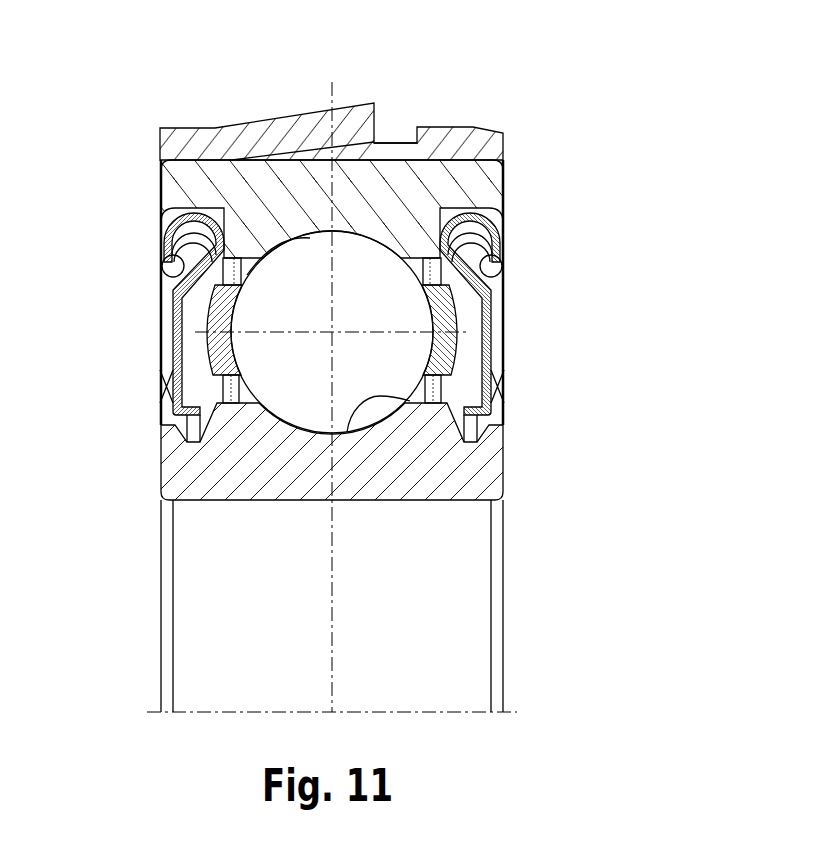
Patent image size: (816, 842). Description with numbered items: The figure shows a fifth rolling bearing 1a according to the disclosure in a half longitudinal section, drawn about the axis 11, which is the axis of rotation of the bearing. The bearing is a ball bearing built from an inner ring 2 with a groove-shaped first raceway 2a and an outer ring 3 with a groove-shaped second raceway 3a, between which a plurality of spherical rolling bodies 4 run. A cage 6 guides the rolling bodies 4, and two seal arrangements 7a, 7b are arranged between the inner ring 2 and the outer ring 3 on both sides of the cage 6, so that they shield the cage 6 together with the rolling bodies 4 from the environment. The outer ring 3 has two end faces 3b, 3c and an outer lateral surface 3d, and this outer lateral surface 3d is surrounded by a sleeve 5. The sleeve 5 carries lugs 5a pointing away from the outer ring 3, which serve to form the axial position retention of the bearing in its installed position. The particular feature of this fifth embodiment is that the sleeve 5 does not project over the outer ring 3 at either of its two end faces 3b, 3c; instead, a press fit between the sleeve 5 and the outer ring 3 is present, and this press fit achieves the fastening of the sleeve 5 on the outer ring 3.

The fifth rolling bearing 1a is at (666, 302).
The inner ring 2 is at (493, 480).
The first raceway 2a is at (410, 401).
The outer ring 3 is at (398, 190).
The second raceway 3a is at (247, 275).
The first end face 3b is at (160, 182).
The second end face 3c is at (505, 195).
The outer lateral surface 3d is at (403, 143).
The spherical rolling bodies 4 is at (383, 363).
The sleeve 5 is at (190, 128).
The lugs 5a is at (362, 117).
The cage 6 is at (427, 358).
The first seal arrangement 7a is at (177, 315).
The second seal arrangement 7b is at (487, 312).
The axis 11 is at (472, 712).